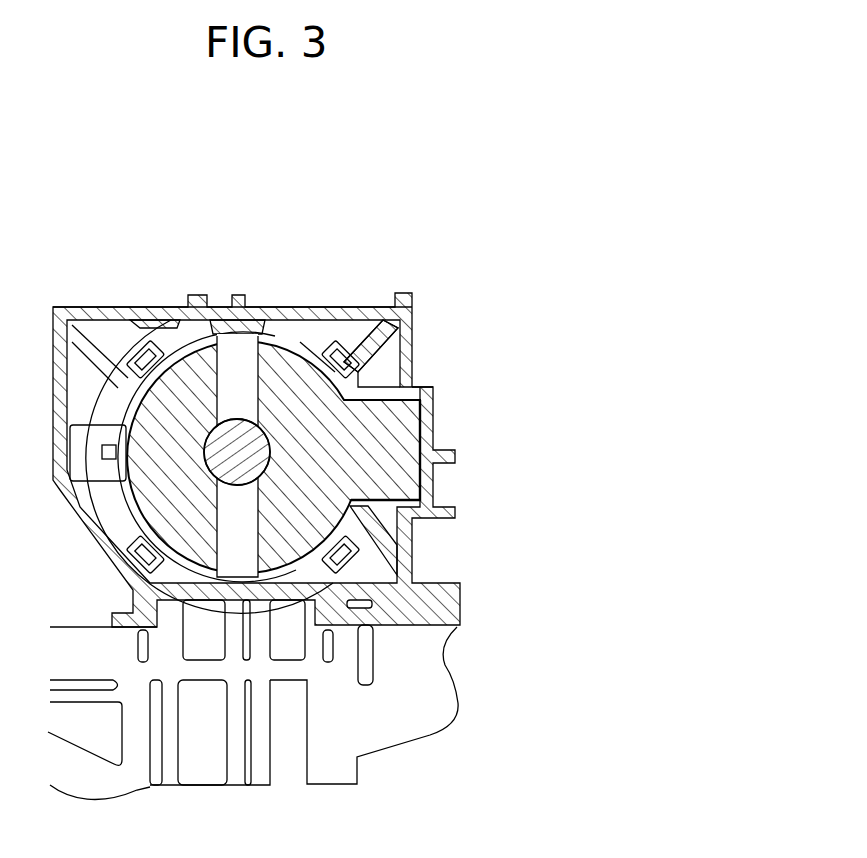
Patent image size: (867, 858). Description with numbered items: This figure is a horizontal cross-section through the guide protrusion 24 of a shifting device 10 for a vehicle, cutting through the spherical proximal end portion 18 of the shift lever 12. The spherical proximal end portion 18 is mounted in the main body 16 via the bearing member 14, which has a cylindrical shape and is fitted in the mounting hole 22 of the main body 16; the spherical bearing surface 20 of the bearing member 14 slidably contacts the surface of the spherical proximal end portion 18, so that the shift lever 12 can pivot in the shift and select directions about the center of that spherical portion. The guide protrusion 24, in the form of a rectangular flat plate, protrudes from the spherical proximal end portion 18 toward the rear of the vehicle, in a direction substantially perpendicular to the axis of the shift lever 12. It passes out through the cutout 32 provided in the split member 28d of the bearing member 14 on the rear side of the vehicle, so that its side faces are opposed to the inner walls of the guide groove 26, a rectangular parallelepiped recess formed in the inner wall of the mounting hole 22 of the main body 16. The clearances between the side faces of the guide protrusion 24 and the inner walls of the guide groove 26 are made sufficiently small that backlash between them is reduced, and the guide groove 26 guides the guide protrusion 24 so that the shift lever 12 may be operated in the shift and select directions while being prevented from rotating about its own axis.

The shifting device 10 is at (440, 232).
The shift lever 12 is at (213, 395).
The bearing member 14 is at (122, 561).
The main body 16 is at (428, 553).
The spherical proximal end portion 18 is at (283, 388).
The spherical bearing surface 20 is at (110, 498).
The mounting hole 22 is at (128, 318).
The guide protrusion 24 is at (400, 452).
The guide groove 26 is at (416, 396).
The split member 28d is at (345, 340).
The cutout 32 is at (329, 378).